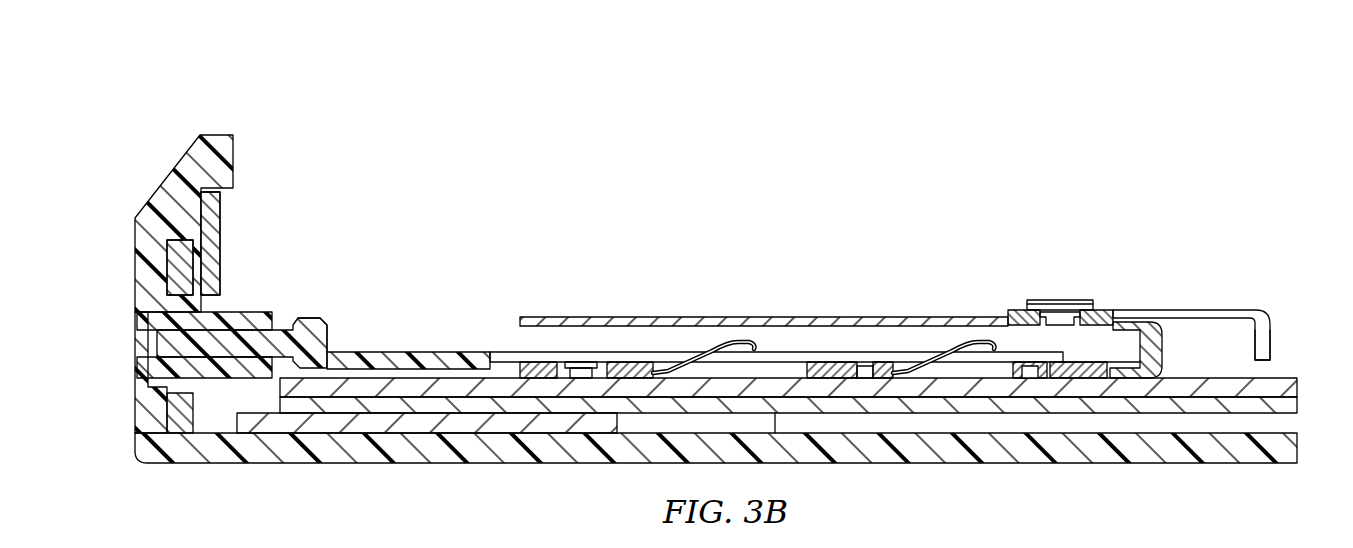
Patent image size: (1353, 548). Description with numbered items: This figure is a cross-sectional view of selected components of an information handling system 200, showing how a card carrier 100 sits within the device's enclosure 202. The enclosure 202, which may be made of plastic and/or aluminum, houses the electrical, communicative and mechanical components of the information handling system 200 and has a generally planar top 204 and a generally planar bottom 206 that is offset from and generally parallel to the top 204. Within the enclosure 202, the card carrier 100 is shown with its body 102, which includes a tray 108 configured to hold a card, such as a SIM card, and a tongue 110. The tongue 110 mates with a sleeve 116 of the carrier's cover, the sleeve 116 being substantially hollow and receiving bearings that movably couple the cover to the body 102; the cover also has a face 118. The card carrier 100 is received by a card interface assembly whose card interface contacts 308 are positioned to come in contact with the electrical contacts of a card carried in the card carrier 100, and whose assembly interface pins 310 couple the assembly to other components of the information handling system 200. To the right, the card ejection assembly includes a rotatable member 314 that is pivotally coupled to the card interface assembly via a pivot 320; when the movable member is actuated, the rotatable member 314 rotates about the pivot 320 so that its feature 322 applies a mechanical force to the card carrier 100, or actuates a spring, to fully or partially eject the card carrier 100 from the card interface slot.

The information handling system 200 is at (611, 89).
The enclosure 202 is at (166, 180).
The top 204 is at (135, 413).
The bottom 206 is at (331, 465).
The card carrier 100 is at (313, 321).
The body 102 is at (374, 352).
The tray 108 is at (452, 352).
The tongue 110 is at (288, 328).
The sleeve 116 is at (231, 312).
The face 118 is at (135, 323).
The card interface contacts 308 is at (737, 337).
The assembly interface pins 310 is at (1154, 352).
The rotatable member 314 is at (1195, 310).
The pivot 320 is at (1060, 298).
The feature 322 is at (1272, 345).